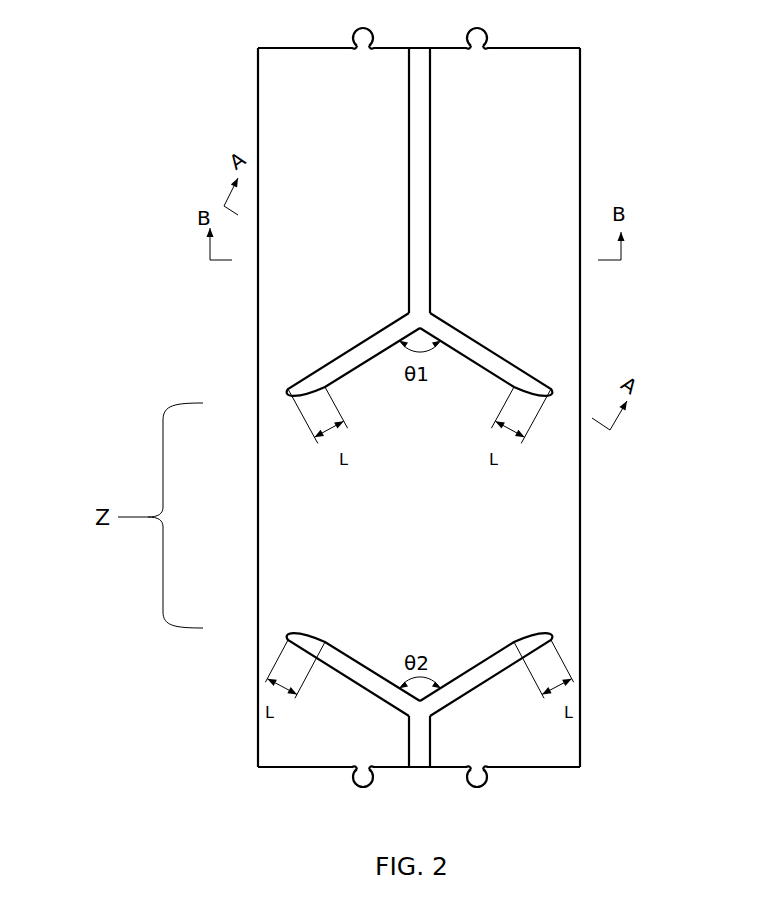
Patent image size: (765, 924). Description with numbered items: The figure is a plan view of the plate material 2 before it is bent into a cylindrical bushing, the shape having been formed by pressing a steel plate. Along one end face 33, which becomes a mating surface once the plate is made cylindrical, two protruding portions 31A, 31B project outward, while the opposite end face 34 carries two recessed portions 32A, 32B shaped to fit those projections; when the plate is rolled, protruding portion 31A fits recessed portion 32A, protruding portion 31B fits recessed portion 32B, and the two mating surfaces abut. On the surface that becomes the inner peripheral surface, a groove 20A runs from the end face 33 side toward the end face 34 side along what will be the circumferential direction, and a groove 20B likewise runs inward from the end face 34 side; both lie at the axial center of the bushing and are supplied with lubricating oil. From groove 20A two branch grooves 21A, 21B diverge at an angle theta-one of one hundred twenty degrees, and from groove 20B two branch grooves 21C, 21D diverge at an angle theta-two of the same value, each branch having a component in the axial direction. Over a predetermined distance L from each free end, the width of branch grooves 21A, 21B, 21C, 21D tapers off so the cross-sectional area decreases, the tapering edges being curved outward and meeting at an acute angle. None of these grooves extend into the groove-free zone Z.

The plate material 2 is at (596, 106).
The groove 20A is at (430, 168).
The groove 20B is at (414, 753).
The branch groove 21A is at (485, 353).
The branch groove 21B is at (362, 349).
The branch groove 21C is at (513, 647).
The branch groove 21D is at (333, 662).
The protruding portion 31A is at (350, 41).
The protruding portion 31B is at (463, 41).
The recessed portion 32A is at (357, 776).
The recessed portion 32B is at (470, 776).
The end face 33 is at (533, 45).
The end face 34 is at (556, 769).